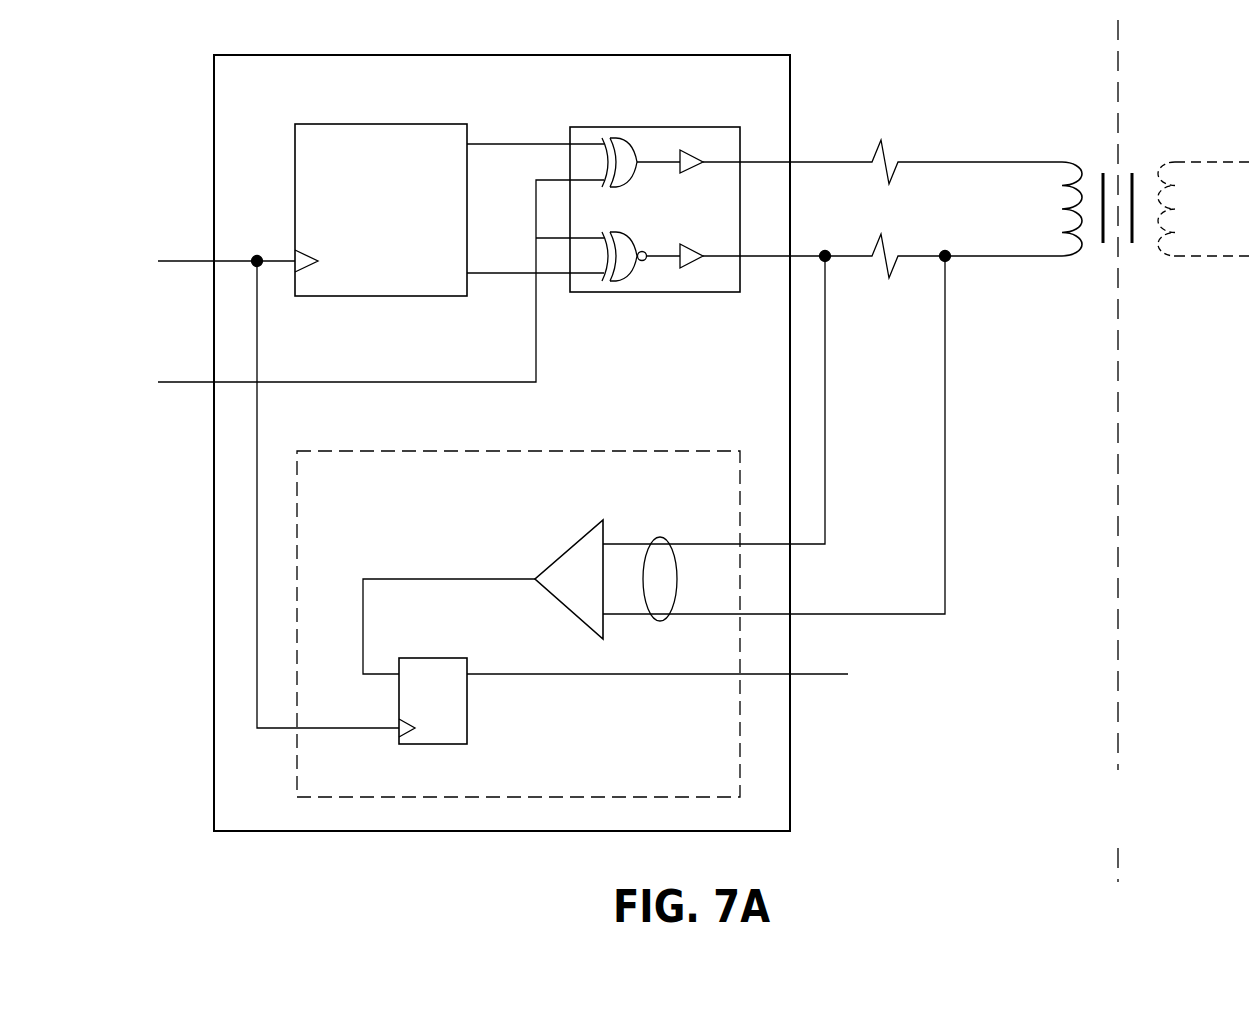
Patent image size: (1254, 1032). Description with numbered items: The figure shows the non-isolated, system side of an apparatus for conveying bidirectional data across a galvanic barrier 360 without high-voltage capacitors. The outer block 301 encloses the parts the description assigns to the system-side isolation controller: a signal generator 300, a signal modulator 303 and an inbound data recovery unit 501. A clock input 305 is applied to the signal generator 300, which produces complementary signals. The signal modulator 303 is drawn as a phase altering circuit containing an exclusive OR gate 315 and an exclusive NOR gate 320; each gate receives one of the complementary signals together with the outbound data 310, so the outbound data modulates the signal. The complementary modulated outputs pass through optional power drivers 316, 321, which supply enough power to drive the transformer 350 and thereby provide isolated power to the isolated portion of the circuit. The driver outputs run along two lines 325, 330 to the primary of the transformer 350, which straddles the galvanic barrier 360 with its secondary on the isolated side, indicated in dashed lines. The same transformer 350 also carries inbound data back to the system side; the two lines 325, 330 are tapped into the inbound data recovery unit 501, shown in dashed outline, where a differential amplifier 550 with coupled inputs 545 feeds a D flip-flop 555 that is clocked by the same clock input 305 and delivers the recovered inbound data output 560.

The signal generator 300 is at (384, 124).
The isolator circuit 301 is at (214, 812).
The signal modulator 303 is at (582, 292).
The clock input 305 is at (179, 260).
The outbound data 310 is at (401, 382).
The exclusive OR gate 315 is at (622, 145).
The power driver 316 is at (701, 150).
The exclusive NOR gate 320 is at (620, 273).
The power driver 321 is at (700, 268).
The first transmission line 325 is at (883, 146).
The second transmission line 330 is at (883, 240).
The transformer 350 is at (1145, 167).
The galvanic barrier 360 is at (1120, 554).
The inbound data recovery unit 501 is at (658, 450).
The differential input coupling 545 is at (658, 537).
The differential amplifier 550 is at (592, 535).
The D flip-flop 555 is at (430, 658).
The recovered inbound data output 560 is at (625, 676).